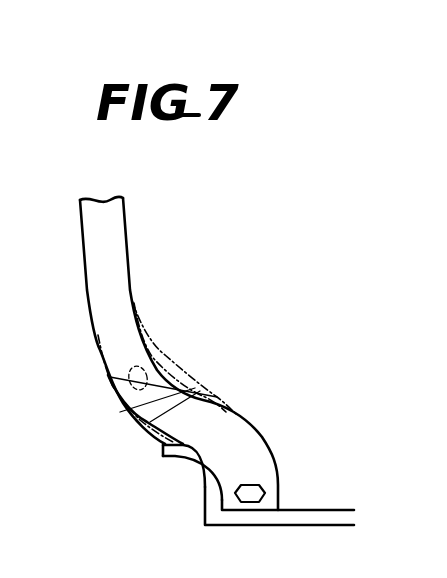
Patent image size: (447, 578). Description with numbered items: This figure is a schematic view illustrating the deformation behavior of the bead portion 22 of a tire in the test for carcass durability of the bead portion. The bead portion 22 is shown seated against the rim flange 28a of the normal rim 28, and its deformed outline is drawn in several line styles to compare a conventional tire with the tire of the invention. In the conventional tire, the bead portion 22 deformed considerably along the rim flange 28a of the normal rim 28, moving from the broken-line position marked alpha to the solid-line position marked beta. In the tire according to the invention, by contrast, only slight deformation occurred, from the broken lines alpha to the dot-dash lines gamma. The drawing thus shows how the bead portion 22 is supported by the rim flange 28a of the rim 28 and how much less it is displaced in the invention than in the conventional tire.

The bead portion 22 is at (250, 457).
The normal rim 28 is at (310, 526).
The rim flange 28a is at (202, 483).